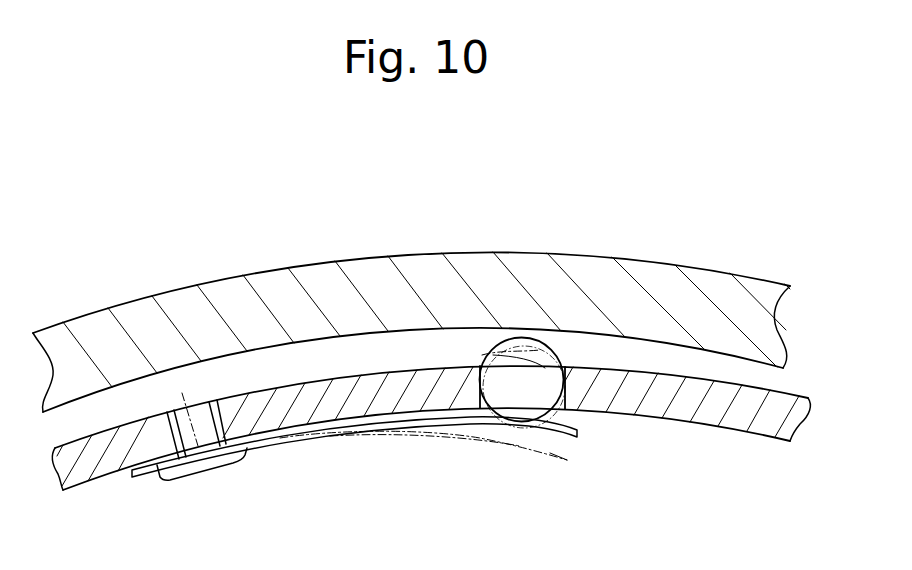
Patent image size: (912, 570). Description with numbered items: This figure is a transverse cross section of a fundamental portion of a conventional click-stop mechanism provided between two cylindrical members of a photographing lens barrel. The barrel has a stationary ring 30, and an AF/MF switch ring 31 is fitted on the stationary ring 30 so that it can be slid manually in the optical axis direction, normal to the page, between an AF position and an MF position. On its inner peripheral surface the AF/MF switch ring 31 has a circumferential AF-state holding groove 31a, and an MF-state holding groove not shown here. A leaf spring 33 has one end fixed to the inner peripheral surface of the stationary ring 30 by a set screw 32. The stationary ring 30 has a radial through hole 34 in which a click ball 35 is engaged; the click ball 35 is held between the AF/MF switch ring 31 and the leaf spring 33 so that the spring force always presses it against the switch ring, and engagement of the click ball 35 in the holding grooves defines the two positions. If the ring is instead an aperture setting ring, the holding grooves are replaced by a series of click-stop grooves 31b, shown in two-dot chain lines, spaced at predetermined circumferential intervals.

The stationary ring 30 is at (720, 410).
The AF/MF switch ring 31 is at (443, 280).
The AF-state holding groove 31a is at (683, 360).
The click-stop grooves 31b is at (145, 422).
The set screw 32 is at (203, 465).
The leaf spring 33 is at (577, 435).
The radial through hole 34 is at (554, 372).
The click ball 35 is at (495, 341).